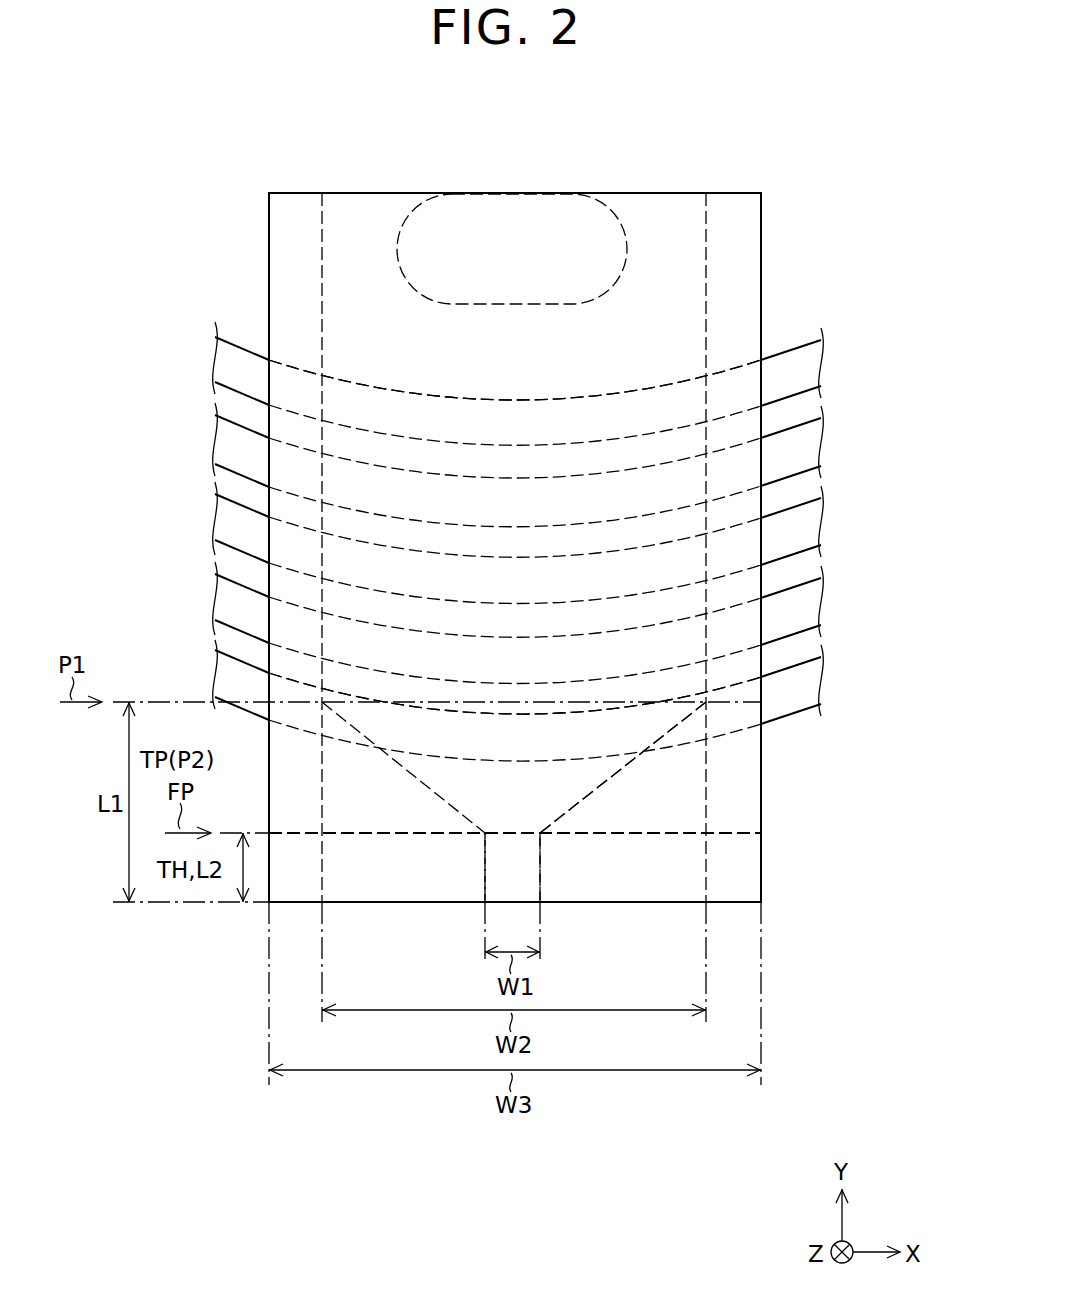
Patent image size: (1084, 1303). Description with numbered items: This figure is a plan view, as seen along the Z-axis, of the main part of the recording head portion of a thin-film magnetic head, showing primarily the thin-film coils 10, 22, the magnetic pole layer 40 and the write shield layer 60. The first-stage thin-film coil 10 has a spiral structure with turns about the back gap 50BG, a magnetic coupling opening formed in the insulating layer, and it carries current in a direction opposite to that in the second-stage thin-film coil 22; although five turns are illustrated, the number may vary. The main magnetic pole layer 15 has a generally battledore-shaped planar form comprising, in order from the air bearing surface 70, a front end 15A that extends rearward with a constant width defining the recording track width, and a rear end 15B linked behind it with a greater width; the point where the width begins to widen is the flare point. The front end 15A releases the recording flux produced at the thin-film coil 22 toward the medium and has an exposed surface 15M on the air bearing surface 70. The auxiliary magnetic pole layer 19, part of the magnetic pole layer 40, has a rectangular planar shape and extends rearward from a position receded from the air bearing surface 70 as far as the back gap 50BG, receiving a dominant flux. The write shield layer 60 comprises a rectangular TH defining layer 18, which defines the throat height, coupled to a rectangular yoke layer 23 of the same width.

The first-stage thin-film coil 10 is at (496, 520).
The second-stage thin-film coil 22 is at (237, 356).
The back gap 50BG is at (432, 229).
The main magnetic pole layer 15 is at (862, 772).
The front end 15A is at (528, 870).
The rear end 15B is at (587, 783).
The exposed surface 15M is at (523, 905).
The TH defining layer 18 is at (745, 850).
The auxiliary magnetic pole layer 19 is at (703, 663).
The yoke layer 23 is at (745, 880).
The magnetic pole layer 40 is at (892, 728).
The write shield layer 60 is at (848, 868).
The air bearing surface 70 is at (388, 905).